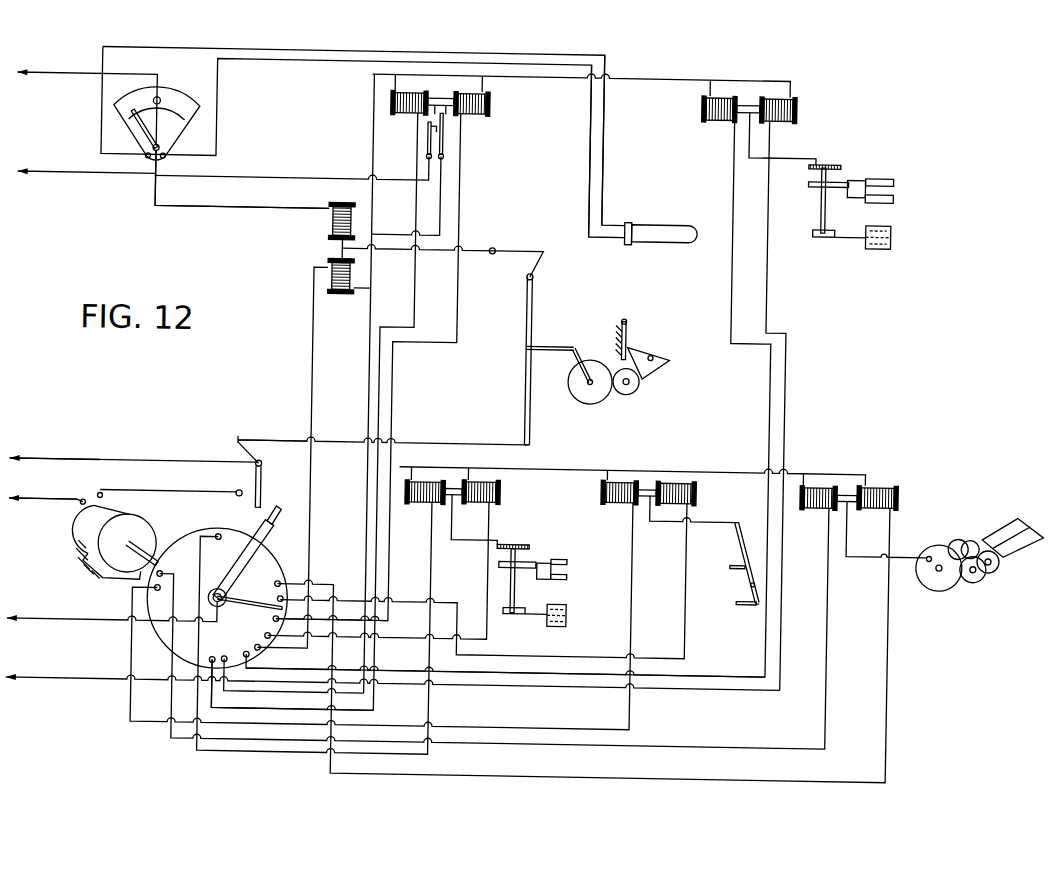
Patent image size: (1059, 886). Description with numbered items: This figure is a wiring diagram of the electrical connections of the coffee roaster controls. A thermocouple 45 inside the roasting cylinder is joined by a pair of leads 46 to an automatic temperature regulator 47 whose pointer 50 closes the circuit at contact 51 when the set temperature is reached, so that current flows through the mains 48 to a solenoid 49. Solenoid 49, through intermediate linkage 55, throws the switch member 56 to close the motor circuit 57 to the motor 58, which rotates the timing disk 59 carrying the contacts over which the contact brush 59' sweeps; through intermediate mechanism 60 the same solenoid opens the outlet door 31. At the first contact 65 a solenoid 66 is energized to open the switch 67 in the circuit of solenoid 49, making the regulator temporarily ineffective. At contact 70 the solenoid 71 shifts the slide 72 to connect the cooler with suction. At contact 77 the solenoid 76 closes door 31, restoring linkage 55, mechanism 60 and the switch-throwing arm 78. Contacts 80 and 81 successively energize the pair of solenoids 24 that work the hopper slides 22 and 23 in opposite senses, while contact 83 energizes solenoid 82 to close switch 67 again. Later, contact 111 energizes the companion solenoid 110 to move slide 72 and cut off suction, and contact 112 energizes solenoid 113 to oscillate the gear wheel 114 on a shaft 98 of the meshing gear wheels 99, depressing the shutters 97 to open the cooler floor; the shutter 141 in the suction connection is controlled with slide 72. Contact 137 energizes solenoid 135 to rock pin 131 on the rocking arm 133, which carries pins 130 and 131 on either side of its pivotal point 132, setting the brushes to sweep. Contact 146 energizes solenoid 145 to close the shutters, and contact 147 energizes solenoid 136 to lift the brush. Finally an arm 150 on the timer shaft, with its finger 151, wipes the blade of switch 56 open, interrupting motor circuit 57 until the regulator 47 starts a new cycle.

The slide 22 is at (862, 175).
The slide 23 is at (867, 237).
The pair of solenoids 24 is at (759, 122).
The door 31 is at (629, 336).
The thermocouple 45 is at (656, 225).
The pair of leads 46 is at (598, 157).
The automatic temperature regulator 47 is at (181, 107).
The mains 48 is at (289, 187).
The solenoid 49 is at (329, 229).
The pointer 50 is at (127, 119).
The contact 51 is at (152, 103).
The intermediate linkage 55 is at (522, 308).
The switch member 56 is at (266, 487).
The motor circuit 57 is at (70, 503).
The motor 58 is at (85, 536).
The timing disk 59 is at (212, 598).
The contact brush 59' is at (216, 579).
The intermediate mechanism 60 is at (585, 358).
The contact 65 is at (275, 621).
The solenoid 66 is at (466, 117).
The switch 67 is at (422, 137).
The contact 70 is at (255, 627).
The solenoid 71 is at (500, 502).
The slide 72 is at (570, 614).
The solenoid 76 is at (341, 297).
The contact 77 is at (248, 639).
The switch-throwing arm 78 is at (238, 443).
The contact 80 is at (235, 646).
The contact 81 is at (217, 644).
The solenoid 82 is at (404, 115).
The contact 83 is at (203, 649).
The shutters 97 is at (1002, 512).
The shafts 98 is at (957, 537).
The meshing gear wheels 99 is at (970, 532).
The solenoid 110 is at (428, 504).
The contact 111 is at (157, 596).
The contact 112 is at (164, 577).
The solenoid 113 is at (819, 503).
The gear wheel 114 is at (934, 576).
The pin 130 is at (734, 564).
The pin 131 is at (748, 602).
The pivotal point 132 is at (753, 582).
The rocking arm 133 is at (739, 534).
The solenoid 135 is at (620, 503).
The solenoid 136 is at (699, 490).
The contact 137 is at (220, 539).
The shutter 141 is at (545, 561).
The solenoid 145 is at (882, 484).
The contact 146 is at (285, 584).
The contact 147 is at (261, 585).
The arm 150 is at (270, 537).
The finger 151 is at (278, 511).